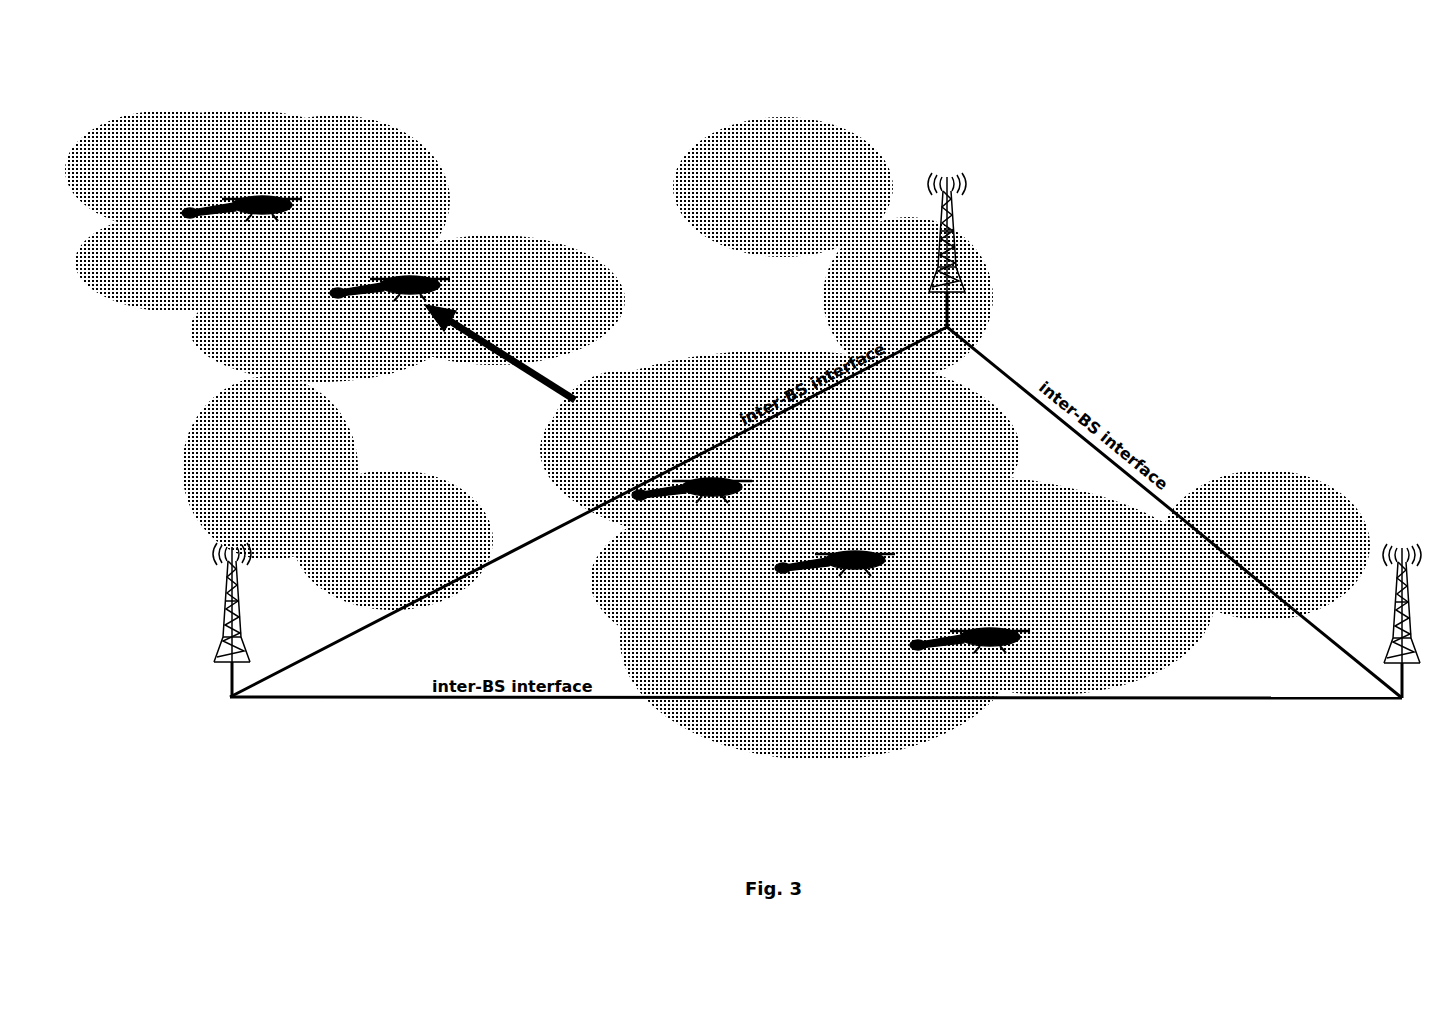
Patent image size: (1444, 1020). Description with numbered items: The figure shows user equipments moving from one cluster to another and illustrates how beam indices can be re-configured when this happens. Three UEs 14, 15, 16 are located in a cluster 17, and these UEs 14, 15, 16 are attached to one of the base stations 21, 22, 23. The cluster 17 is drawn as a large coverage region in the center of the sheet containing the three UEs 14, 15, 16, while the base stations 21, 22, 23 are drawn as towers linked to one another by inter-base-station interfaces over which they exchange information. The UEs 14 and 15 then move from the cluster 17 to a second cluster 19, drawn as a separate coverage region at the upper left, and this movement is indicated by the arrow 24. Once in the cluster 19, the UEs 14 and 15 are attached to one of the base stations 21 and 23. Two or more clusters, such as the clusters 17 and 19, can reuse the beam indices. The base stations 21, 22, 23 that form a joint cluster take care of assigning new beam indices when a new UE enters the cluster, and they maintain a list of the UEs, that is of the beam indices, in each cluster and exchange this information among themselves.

The UE 14 is at (277, 193).
The UE 15 is at (418, 278).
The UE 16 is at (1010, 632).
The cluster 17 is at (838, 665).
The cluster 19 is at (225, 315).
The base station 21 is at (228, 600).
The base station 22 is at (1402, 580).
The base station 23 is at (945, 198).
The arrow 24 is at (500, 352).